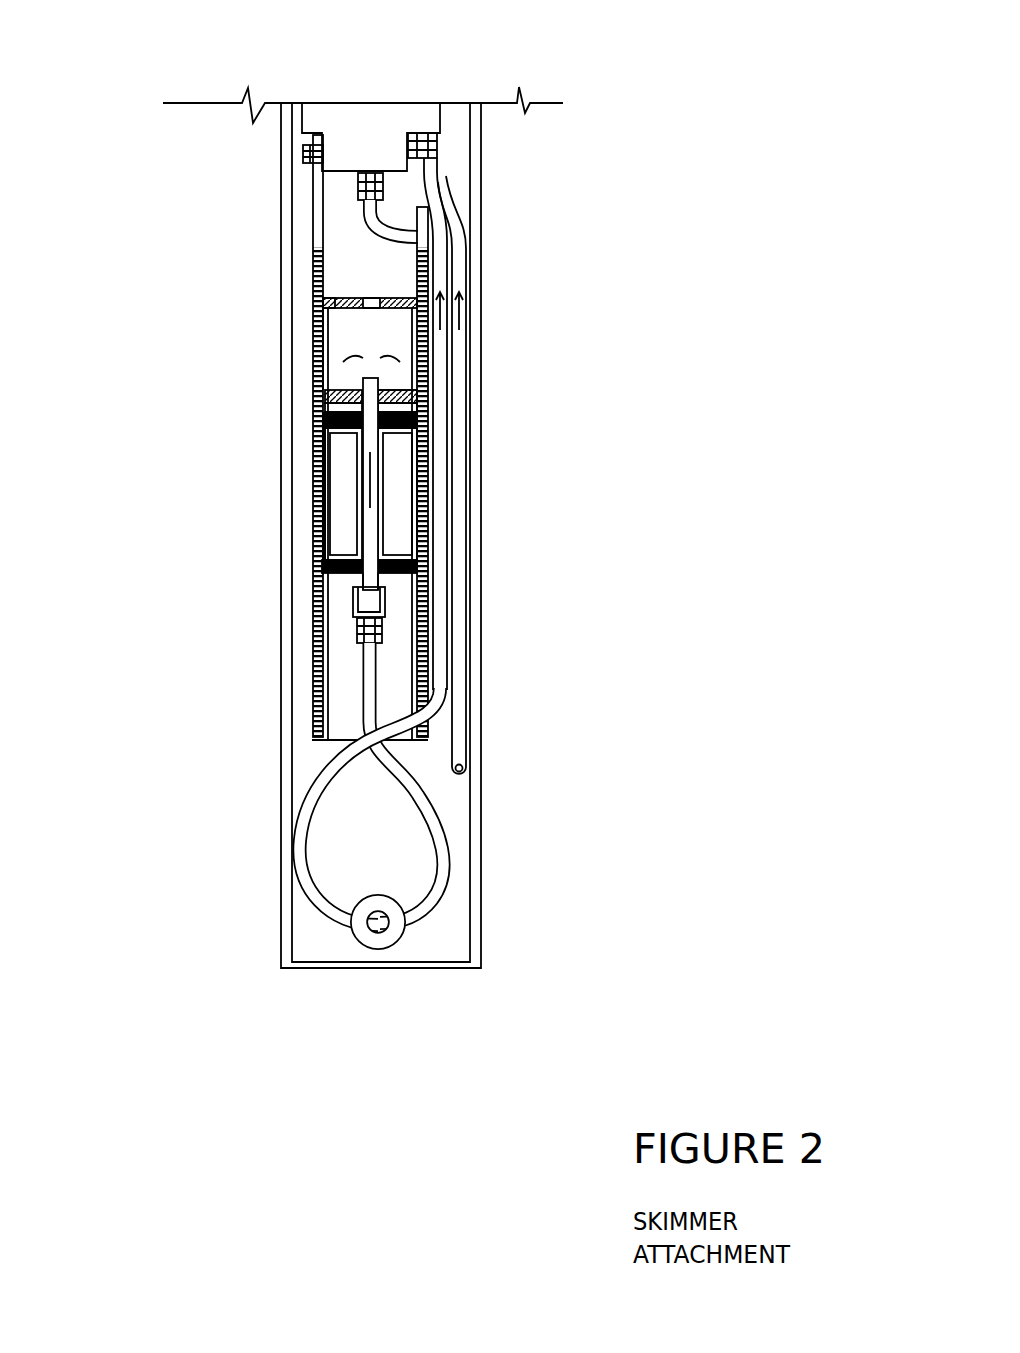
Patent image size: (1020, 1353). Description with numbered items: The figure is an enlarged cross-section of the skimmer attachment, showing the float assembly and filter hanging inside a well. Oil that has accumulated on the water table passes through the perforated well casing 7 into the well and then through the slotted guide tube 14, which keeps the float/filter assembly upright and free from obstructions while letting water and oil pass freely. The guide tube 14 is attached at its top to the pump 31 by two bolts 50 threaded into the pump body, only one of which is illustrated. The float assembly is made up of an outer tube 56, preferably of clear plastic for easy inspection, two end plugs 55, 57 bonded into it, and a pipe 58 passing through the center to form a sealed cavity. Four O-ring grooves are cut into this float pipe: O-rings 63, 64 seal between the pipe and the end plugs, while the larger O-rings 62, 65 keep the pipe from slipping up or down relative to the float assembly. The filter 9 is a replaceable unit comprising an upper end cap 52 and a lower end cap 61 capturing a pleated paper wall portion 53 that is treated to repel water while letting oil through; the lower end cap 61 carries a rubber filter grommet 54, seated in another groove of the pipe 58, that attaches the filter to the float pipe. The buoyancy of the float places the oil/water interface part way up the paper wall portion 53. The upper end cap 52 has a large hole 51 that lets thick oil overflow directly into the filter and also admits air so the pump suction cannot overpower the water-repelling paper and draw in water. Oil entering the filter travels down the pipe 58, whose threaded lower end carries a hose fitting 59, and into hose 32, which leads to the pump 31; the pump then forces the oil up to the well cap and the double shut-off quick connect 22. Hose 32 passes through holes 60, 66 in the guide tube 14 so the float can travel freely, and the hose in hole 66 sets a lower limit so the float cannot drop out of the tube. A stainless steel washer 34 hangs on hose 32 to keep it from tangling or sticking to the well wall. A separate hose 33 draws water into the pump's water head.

The well casing 7 is at (281, 508).
The filter 9 is at (397, 332).
The slotted guide tube 14 is at (440, 520).
The quick connect 22 is at (306, 677).
The pump 31 is at (302, 123).
The hose 32 is at (448, 505).
The hose 33 is at (459, 555).
The stainless steel washer 34 is at (390, 905).
The bolt 50 is at (305, 153).
The hole 51 is at (365, 299).
The upper end cap 52 is at (324, 302).
The pleated paper wall portion 53 is at (328, 352).
The filter grommet 54 is at (323, 402).
The end plug 55 is at (323, 418).
The outer tube 56 is at (323, 463).
The end plug 57 is at (355, 572).
The pipe 58 is at (358, 476).
The hose fitting 59 is at (356, 637).
The hole 60 is at (428, 233).
The lower end cap 61 is at (380, 406).
The O-ring 62 is at (419, 400).
The O-ring 63 is at (418, 417).
The O-ring 64 is at (382, 572).
The O-ring 65 is at (384, 578).
The hole 66 is at (427, 717).